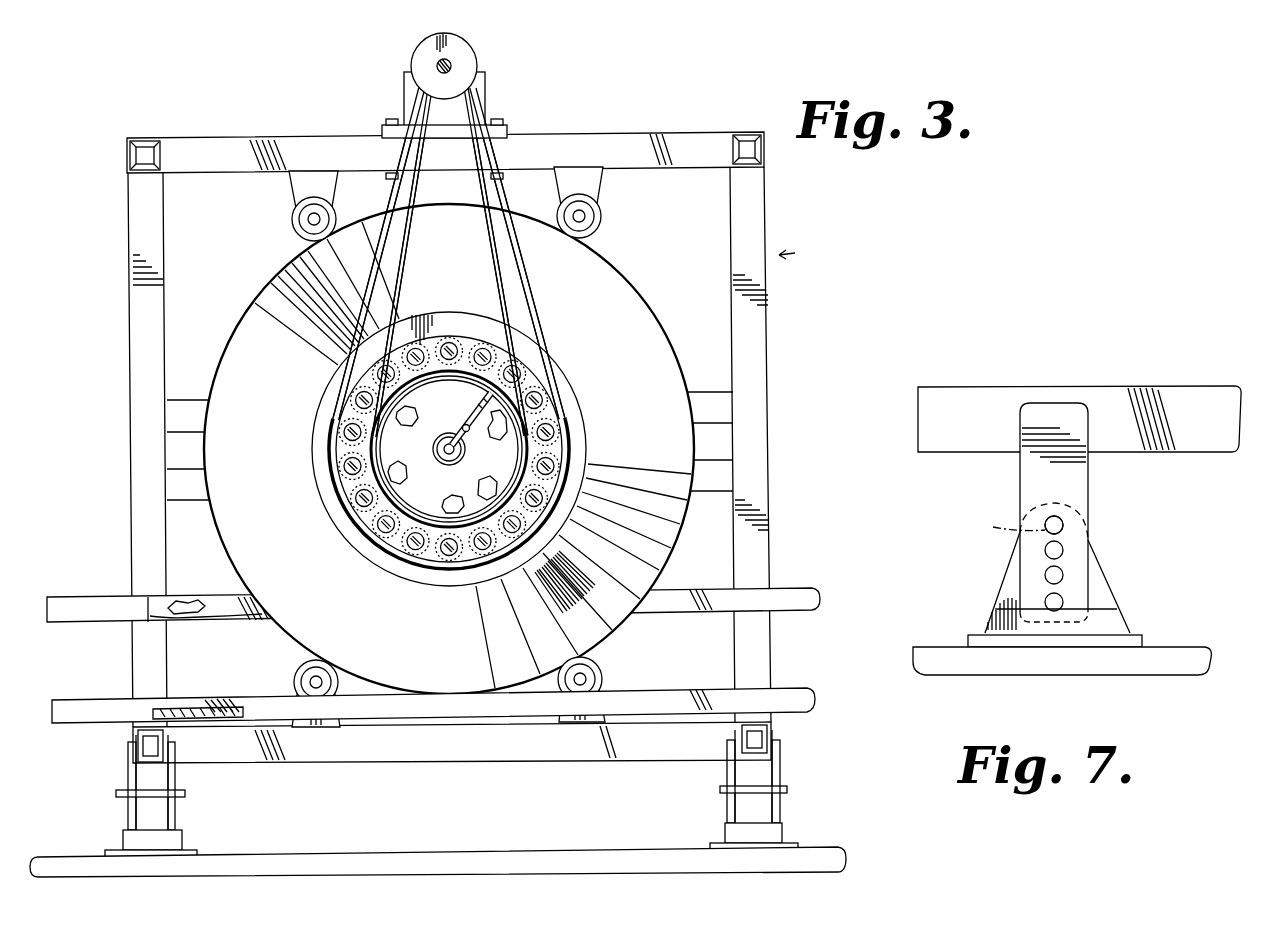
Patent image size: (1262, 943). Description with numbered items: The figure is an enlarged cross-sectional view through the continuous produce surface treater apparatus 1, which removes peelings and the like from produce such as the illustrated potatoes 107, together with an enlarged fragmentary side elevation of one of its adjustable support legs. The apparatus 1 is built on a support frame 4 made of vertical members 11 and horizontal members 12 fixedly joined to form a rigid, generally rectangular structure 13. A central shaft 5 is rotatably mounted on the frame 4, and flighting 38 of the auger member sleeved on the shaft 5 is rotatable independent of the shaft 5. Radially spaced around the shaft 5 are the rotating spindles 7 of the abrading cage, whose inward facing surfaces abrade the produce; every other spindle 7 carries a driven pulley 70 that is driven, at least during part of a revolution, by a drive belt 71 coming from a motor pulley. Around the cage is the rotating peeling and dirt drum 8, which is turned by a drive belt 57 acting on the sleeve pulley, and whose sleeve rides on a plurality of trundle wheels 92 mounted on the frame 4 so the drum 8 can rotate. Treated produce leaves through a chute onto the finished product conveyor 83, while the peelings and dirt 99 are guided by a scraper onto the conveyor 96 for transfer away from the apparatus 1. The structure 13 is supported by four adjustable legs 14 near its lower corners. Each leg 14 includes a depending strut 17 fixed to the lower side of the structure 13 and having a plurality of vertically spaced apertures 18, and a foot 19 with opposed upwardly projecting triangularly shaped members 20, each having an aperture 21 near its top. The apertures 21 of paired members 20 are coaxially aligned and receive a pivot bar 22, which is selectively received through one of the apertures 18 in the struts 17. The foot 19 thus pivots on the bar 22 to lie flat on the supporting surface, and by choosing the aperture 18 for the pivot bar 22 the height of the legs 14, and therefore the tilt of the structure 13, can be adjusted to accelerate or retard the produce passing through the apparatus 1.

In FIG. 3, the continuous produce surface treater apparatus 1 is at (795, 251).
In FIG. 3, the support frame 4 is at (769, 556).
In FIG. 3, the central shaft 5 is at (463, 452).
In FIG. 3, the rotating spindles 7 is at (560, 478).
In FIG. 3, the rotating peeling and dirt drum 8 is at (641, 300).
In FIG. 3, the vertical members 11 is at (128, 266).
In FIG. 3, the horizontal members 12 is at (222, 138).
In FIG. 7, the horizontal members 12 is at (1150, 388).
In FIG. 3, the rectangular shaped structure 13 is at (615, 132).
In FIG. 3, the adjustable legs 14 is at (180, 826).
In FIG. 7, the adjustable legs 14 is at (1020, 581).
In FIG. 7, the depending strut 17 is at (1090, 513).
In FIG. 7, the apertures 18 is at (1058, 550).
In FIG. 7, the foot 19 is at (1141, 635).
In FIG. 7, the triangularly shaped members 20 is at (1117, 597).
In FIG. 7, the aperture 21 is at (1008, 526).
In FIG. 3, the pivot bar 22 is at (145, 783).
In FIG. 7, the pivot bar 22 is at (1052, 517).
In FIG. 3, the flighting 38 is at (463, 420).
In FIG. 3, the drive belt 57 is at (496, 259).
In FIG. 3, the driven pulley 70 is at (557, 421).
In FIG. 3, the drive belt 71 is at (522, 268).
In FIG. 3, the finished product conveyor 83 is at (680, 588).
In FIG. 3, the trundle wheels 92 is at (336, 212).
In FIG. 3, the conveyor 96 is at (680, 688).
In FIG. 3, the peelings and dirt 99 is at (192, 698).
In FIG. 3, the potatoes 107 is at (478, 488).